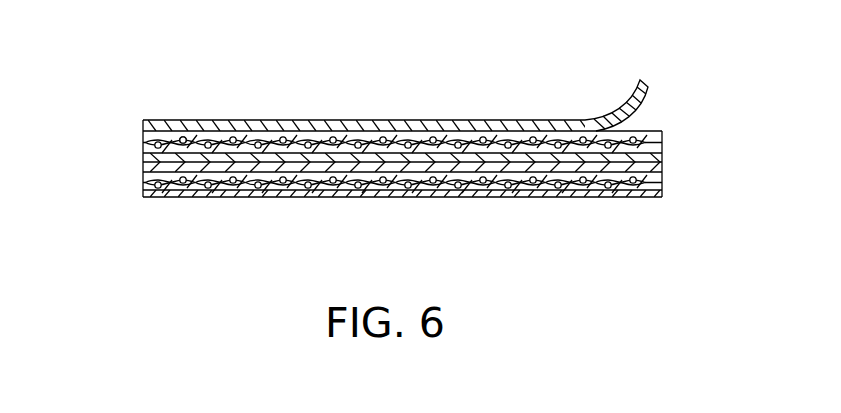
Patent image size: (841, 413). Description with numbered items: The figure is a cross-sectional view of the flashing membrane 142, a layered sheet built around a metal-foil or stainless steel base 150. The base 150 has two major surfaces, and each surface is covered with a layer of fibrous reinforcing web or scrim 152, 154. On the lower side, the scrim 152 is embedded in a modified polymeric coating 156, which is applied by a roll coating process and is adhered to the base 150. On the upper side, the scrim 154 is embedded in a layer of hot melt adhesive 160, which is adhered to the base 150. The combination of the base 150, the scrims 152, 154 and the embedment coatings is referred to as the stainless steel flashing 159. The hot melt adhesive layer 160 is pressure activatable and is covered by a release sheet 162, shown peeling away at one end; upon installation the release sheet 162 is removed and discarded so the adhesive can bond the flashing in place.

The multilayer composite sheet 142 is at (386, 120).
The metal foil or stainless steel base 150 is at (150, 165).
The fibrous reinforcing web or scrim 152 is at (188, 182).
The fibrous reinforcing web or scrim 154 is at (184, 137).
The modified polymeric coating 156 is at (142, 194).
The stainless steel flashing 159 is at (525, 140).
The hot melt adhesive layer 160 is at (237, 125).
The release sheet 162 is at (272, 125).